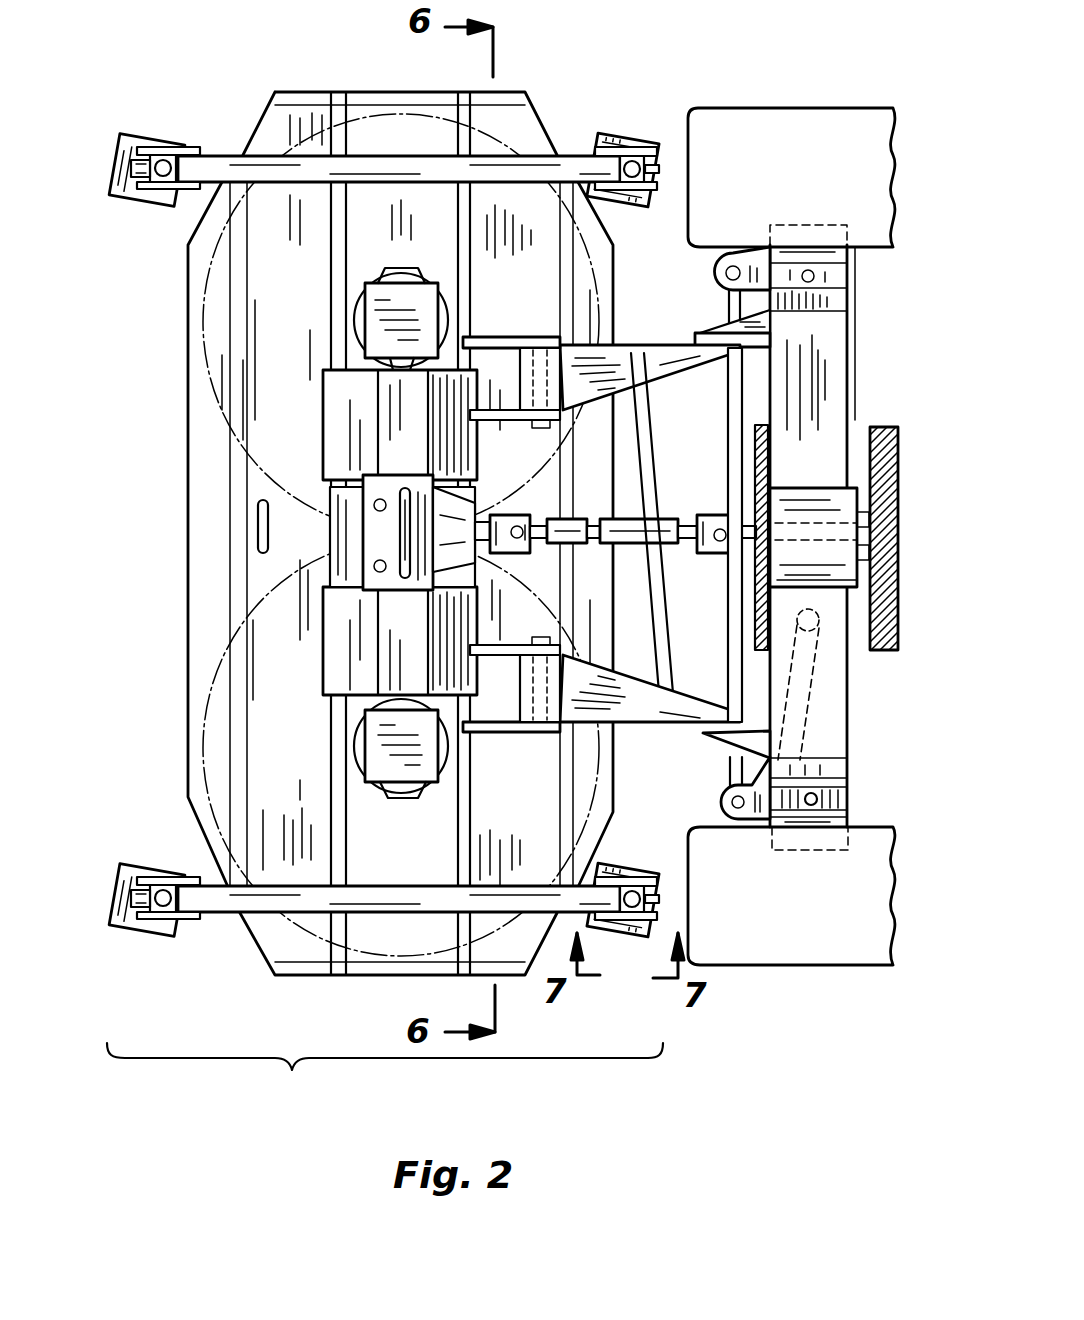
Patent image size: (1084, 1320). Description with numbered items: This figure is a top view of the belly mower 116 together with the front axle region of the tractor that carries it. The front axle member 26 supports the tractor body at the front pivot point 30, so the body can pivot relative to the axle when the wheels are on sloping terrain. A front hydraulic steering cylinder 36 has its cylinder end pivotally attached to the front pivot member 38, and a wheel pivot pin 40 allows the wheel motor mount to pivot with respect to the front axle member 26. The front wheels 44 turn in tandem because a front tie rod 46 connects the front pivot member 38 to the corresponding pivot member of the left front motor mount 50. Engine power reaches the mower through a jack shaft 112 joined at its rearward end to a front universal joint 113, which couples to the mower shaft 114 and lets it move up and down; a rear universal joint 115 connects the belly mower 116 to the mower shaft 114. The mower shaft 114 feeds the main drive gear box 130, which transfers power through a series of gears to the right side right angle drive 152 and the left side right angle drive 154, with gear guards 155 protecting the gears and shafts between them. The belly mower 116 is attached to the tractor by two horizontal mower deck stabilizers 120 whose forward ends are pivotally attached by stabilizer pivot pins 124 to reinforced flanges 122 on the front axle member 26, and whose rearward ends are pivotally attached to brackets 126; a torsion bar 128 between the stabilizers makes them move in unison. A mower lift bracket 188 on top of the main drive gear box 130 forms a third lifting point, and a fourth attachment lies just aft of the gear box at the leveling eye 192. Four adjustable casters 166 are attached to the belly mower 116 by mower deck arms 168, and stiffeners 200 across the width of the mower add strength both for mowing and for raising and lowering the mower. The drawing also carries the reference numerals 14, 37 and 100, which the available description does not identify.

The tractor frame 14 is at (903, 562).
The front axle member 26 is at (840, 350).
The front pivot point 30 is at (898, 492).
The front hydraulic steering cylinder 36 is at (812, 682).
The pivot pin 37 is at (745, 778).
The front pivot member 38 is at (757, 815).
The wheel pivot pin 40 is at (812, 805).
The front wheels 44 is at (767, 140).
The front tie rod 46 is at (742, 648).
The left front motor mount 50 is at (853, 823).
The mower deck 100 is at (403, 138).
The jack shaft 112 is at (783, 490).
The front universal joint 113 is at (705, 553).
The mower shaft 114 is at (680, 517).
The rear universal joint 115 is at (515, 547).
The belly mower 116 is at (385, 1079).
The mower deck stabilizers 120 is at (663, 370).
The reinforced flanges 122 is at (727, 313).
The stabilizer pivot pins 124 is at (700, 336).
The brackets 126 is at (507, 337).
The torsion bar 128 is at (652, 707).
The main drive gear box 130 is at (380, 467).
The right side right angle drive 152 is at (372, 762).
The left side right angle drive 154 is at (372, 322).
The gear guards 155 is at (345, 395).
The adjustable casters 166 is at (165, 138).
The mower deck arms 168 is at (575, 158).
The mower lift bracket 188 is at (365, 528).
The leveling eye 192 is at (258, 527).
The stiffeners 200 is at (252, 710).